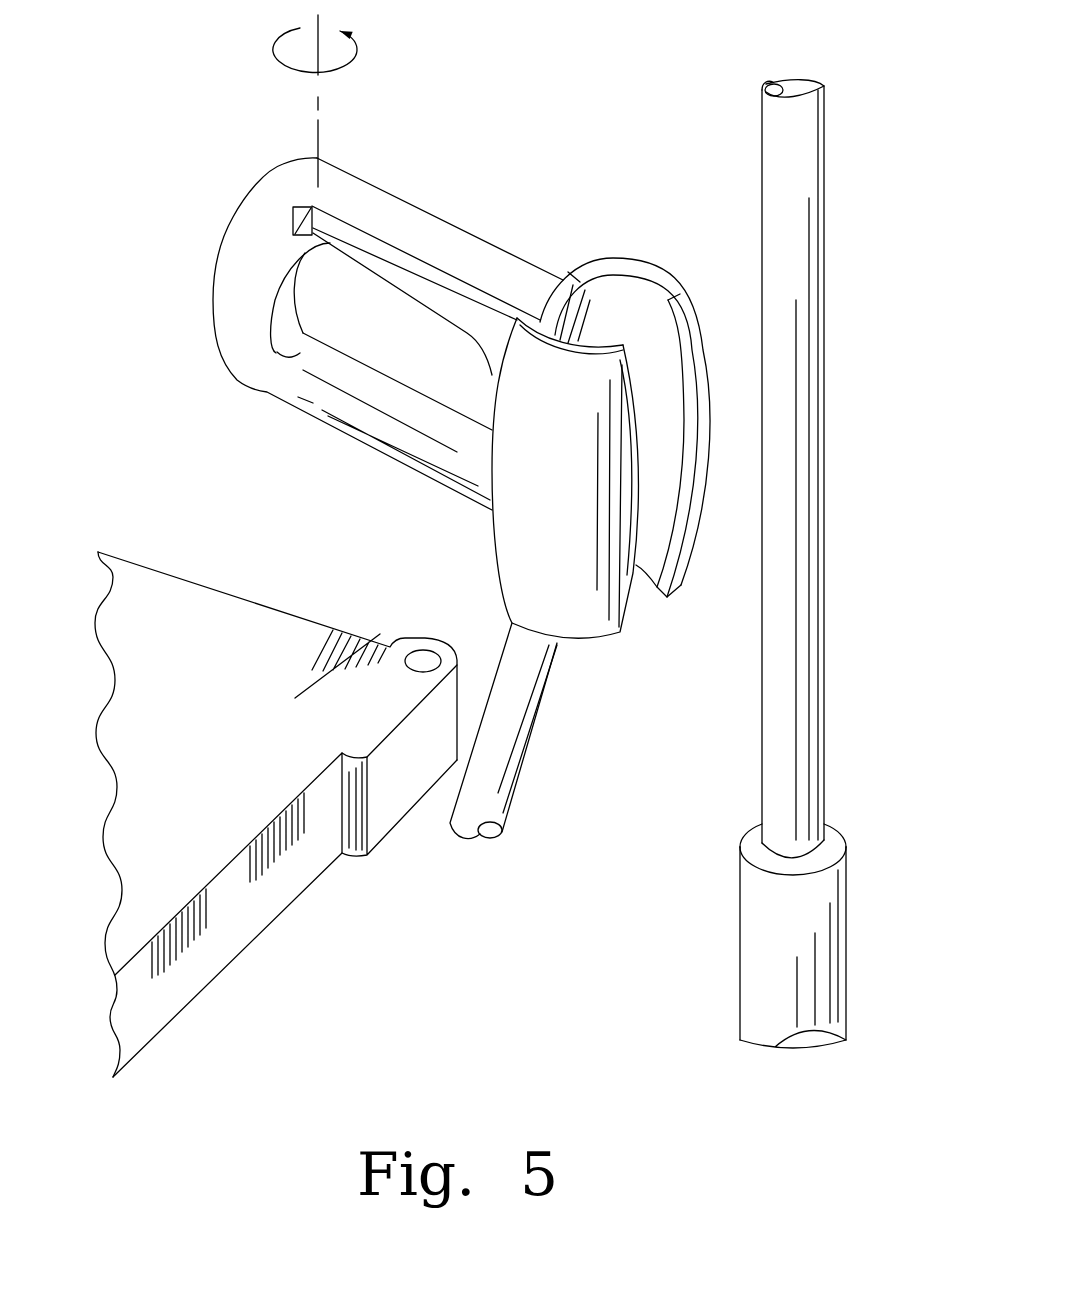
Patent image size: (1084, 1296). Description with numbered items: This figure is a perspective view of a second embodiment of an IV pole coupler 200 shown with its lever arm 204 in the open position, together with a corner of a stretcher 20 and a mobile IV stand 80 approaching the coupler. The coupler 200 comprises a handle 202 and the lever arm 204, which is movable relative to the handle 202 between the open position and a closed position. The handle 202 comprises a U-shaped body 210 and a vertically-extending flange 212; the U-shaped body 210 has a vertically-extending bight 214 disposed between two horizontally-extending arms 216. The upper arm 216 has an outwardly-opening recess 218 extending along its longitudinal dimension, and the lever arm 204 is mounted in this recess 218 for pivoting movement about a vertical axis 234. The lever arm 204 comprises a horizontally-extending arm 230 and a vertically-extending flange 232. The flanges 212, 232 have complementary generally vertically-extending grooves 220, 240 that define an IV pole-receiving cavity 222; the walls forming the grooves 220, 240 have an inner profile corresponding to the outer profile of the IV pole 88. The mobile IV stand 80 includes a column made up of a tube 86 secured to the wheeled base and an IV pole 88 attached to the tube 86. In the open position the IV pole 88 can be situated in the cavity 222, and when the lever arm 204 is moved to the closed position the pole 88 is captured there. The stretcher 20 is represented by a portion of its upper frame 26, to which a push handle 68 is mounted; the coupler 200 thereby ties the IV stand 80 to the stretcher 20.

The stretcher 20 is at (276, 822).
The upper frame 26 is at (238, 927).
The push handle 68 is at (540, 727).
The mobile IV stand 80 is at (827, 564).
The tube 86 is at (847, 922).
The IV pole 88 is at (805, 590).
The IV pole coupler 200 is at (620, 137).
The handle 202 is at (523, 270).
The lever arm 204 is at (457, 340).
The U-shaped body 210 is at (257, 178).
The vertically-extending flange 212 is at (647, 268).
The vertically-extending bight 214 is at (230, 287).
The horizontally-extending arms 216 is at (408, 186).
The outwardly-opening recess 218 is at (293, 222).
The groove 220 is at (640, 303).
The IV pole-receiving cavity 222 is at (728, 495).
The horizontally-extending arm 230 is at (373, 263).
The vertically-extending flange 232 is at (530, 533).
The vertical axis 234 is at (318, 107).
The groove 240 is at (580, 343).